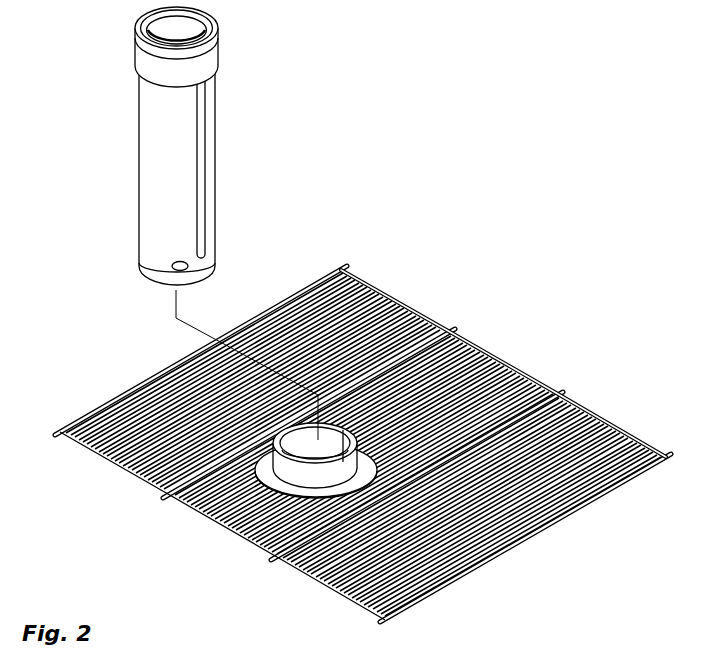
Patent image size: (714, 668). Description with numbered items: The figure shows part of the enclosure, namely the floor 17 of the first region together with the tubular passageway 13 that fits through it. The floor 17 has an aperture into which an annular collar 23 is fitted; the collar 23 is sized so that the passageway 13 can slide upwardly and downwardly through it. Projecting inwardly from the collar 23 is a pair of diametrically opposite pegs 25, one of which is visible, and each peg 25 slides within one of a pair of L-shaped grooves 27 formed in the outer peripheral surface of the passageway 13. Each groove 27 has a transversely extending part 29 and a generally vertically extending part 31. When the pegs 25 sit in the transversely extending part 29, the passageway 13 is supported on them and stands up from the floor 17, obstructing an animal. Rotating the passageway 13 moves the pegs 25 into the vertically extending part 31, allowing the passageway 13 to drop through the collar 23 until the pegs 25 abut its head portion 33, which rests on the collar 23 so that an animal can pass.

The passageway 13 is at (187, 162).
The floor 17 is at (427, 585).
The annular collar 23 is at (370, 465).
The peg 25 is at (285, 452).
The L-shaped groove 27 is at (224, 221).
The transversely extending part 29 is at (182, 265).
The vertically extending part 31 is at (200, 163).
The head portion 33 is at (197, 67).